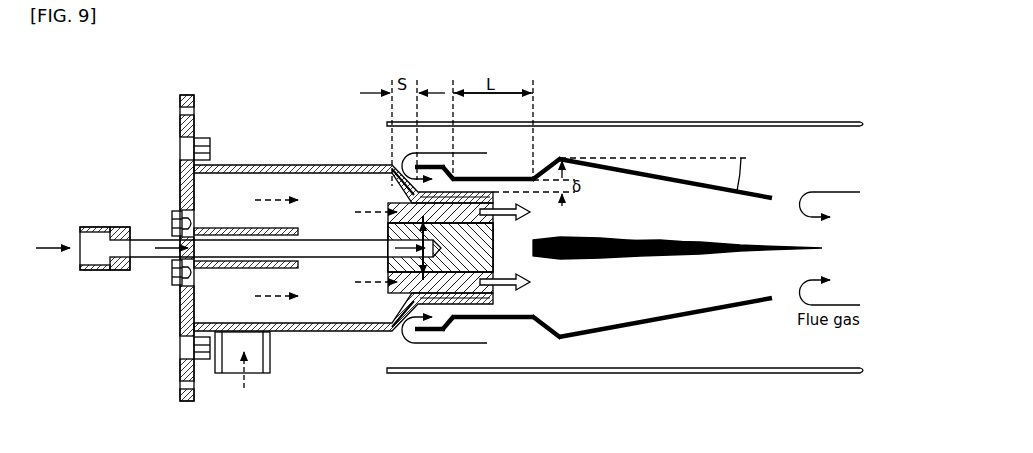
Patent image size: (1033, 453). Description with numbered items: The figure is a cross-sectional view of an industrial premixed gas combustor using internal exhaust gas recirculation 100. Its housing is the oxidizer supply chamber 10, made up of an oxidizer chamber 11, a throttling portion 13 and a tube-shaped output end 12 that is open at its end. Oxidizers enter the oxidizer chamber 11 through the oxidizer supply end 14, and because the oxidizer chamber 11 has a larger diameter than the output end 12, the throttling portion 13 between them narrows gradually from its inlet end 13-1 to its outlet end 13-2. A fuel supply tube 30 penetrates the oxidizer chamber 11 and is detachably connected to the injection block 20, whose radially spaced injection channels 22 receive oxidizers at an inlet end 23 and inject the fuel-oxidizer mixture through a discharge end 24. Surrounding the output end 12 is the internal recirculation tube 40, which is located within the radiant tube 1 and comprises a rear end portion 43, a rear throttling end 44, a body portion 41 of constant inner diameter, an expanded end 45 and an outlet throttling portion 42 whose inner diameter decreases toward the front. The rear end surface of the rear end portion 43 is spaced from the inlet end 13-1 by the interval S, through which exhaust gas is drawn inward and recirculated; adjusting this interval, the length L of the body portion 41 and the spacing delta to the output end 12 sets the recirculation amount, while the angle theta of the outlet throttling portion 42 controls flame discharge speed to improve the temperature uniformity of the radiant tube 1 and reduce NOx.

The industrial premixed gas combustor using internal exhaust gas recirculation 100 is at (313, 63).
The oxidizer supply chamber 10 is at (253, 157).
The oxidizer chamber 11 is at (300, 165).
The throttling portion 13 is at (395, 160).
The inlet end 13-1 is at (393, 178).
The outlet end 13-2 is at (400, 194).
The rear end portion 43 is at (425, 165).
The rear throttling end 44 is at (455, 177).
The body portion 41 is at (507, 177).
The expanded end 45 is at (546, 168).
The radiant tube 1 is at (641, 121).
The outlet throttling portion 42 is at (695, 182).
The internal recirculation tube 40 is at (752, 183).
The injection block 20 is at (508, 232).
The discharge end 24 is at (495, 300).
The inlet end 23 is at (388, 292).
The oxidizer supply end 14 is at (272, 352).
The output end 12 is at (428, 333).
The injection channel 22 is at (455, 303).
The fuel supply tube 30 is at (142, 270).